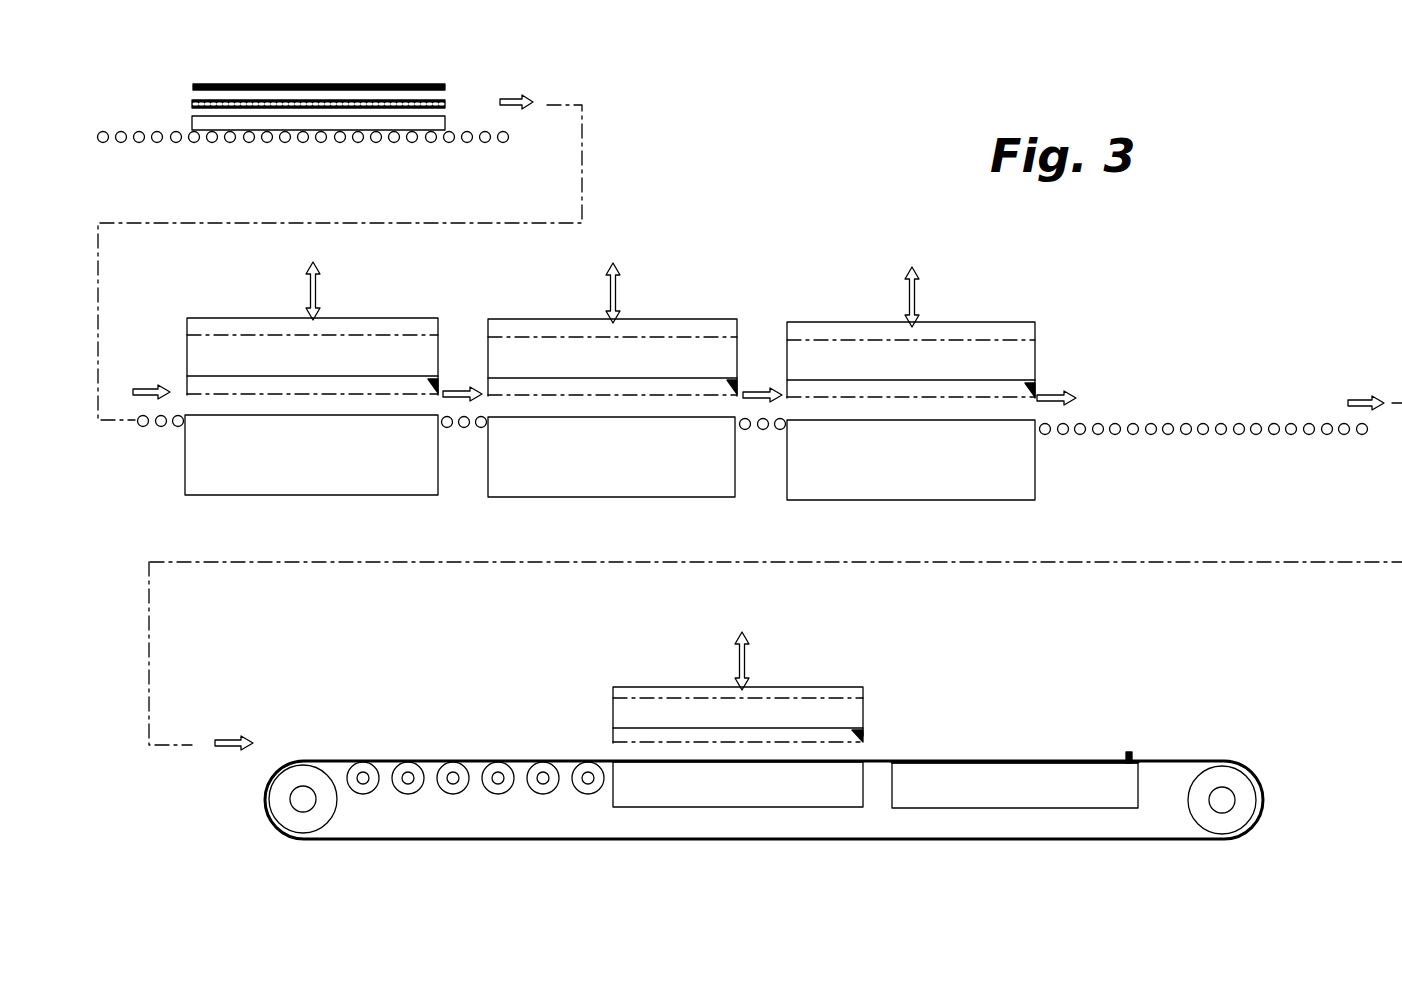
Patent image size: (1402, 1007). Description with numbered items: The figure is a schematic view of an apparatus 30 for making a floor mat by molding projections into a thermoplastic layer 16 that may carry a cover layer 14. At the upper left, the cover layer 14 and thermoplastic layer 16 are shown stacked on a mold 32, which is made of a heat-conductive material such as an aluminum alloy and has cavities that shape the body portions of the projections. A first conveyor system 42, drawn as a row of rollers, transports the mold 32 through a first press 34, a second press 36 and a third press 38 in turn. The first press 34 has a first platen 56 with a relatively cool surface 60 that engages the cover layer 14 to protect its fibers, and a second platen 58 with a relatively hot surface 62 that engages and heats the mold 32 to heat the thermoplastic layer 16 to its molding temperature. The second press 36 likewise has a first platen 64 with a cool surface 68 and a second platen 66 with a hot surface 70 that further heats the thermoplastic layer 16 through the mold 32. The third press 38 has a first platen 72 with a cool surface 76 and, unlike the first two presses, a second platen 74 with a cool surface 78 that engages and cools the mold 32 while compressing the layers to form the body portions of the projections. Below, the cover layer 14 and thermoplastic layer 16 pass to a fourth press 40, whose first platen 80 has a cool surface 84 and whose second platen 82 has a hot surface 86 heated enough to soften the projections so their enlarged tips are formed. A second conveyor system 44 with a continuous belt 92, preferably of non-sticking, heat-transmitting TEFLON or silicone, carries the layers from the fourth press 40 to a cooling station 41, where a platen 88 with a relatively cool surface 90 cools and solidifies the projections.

The cover layer 14 is at (445, 88).
The thermoplastic layer 16 is at (446, 104).
The apparatus 30 is at (1165, 272).
The mold 32 is at (192, 122).
The first press 34 is at (439, 311).
The second press 36 is at (738, 309).
The third press 38 is at (1037, 313).
The fourth press 40 is at (879, 689).
The cooling station 41 is at (1097, 707).
The first conveyor system 42 is at (156, 440).
The second conveyor system 44 is at (280, 843).
The first platen 56 is at (187, 352).
The second platen 58 is at (185, 458).
The cool surface 60 is at (456, 389).
The hot surface 62 is at (418, 410).
The first platen 64 is at (677, 320).
The second platen 66 is at (628, 497).
The cool surface 68 is at (752, 390).
The hot surface 70 is at (713, 412).
The first platen 72 is at (975, 325).
The second platen 74 is at (940, 500).
The cool surface 76 is at (1050, 393).
The cool surface 78 is at (1015, 415).
The first platen 80 is at (847, 688).
The second platen 82 is at (762, 808).
The cool surface 84 is at (872, 745).
The hot surface 86 is at (869, 762).
The platen 88 is at (1085, 808).
The cool surface 90 is at (1132, 753).
The continuous belt 92 is at (490, 838).